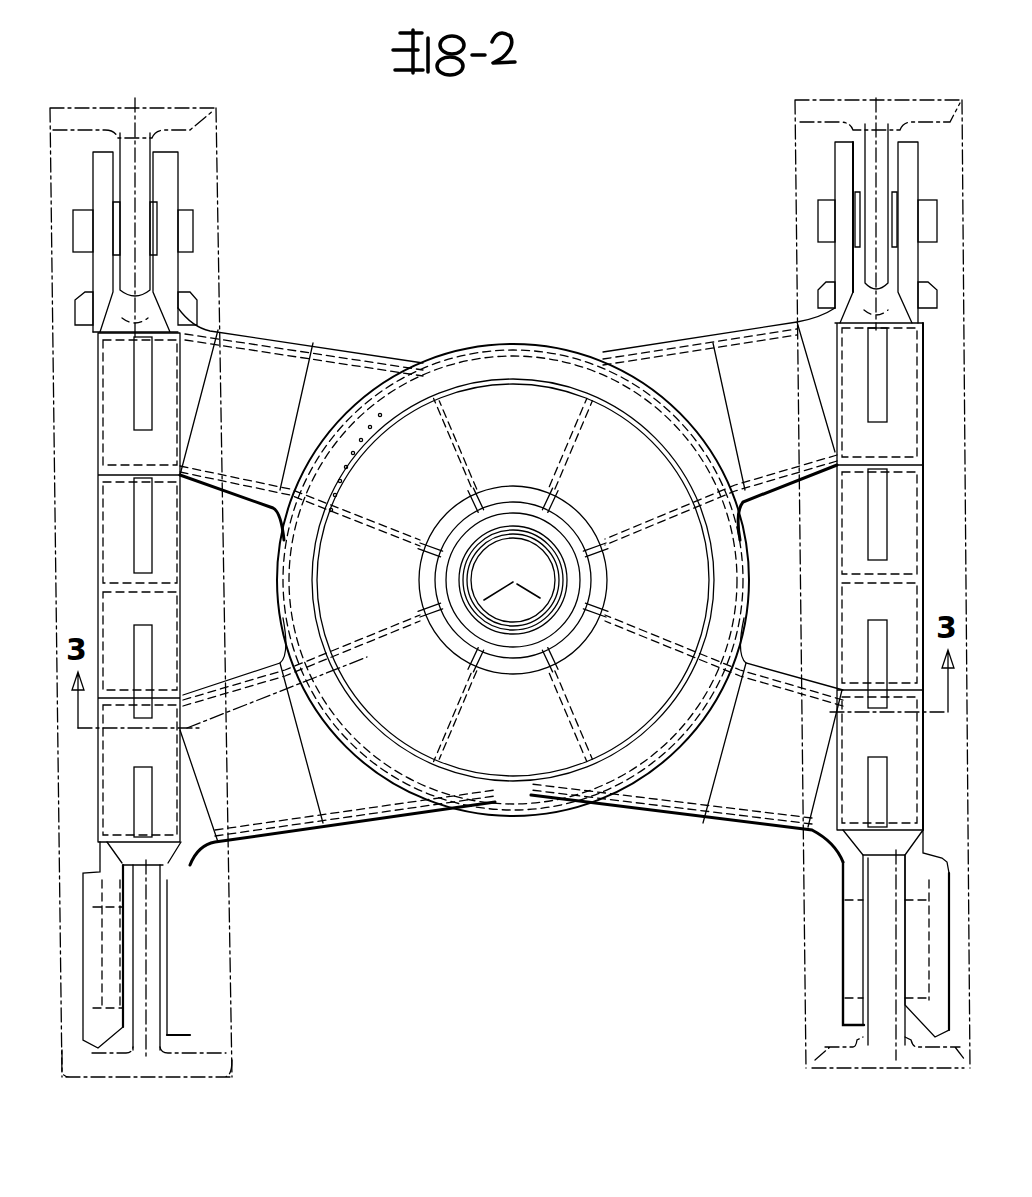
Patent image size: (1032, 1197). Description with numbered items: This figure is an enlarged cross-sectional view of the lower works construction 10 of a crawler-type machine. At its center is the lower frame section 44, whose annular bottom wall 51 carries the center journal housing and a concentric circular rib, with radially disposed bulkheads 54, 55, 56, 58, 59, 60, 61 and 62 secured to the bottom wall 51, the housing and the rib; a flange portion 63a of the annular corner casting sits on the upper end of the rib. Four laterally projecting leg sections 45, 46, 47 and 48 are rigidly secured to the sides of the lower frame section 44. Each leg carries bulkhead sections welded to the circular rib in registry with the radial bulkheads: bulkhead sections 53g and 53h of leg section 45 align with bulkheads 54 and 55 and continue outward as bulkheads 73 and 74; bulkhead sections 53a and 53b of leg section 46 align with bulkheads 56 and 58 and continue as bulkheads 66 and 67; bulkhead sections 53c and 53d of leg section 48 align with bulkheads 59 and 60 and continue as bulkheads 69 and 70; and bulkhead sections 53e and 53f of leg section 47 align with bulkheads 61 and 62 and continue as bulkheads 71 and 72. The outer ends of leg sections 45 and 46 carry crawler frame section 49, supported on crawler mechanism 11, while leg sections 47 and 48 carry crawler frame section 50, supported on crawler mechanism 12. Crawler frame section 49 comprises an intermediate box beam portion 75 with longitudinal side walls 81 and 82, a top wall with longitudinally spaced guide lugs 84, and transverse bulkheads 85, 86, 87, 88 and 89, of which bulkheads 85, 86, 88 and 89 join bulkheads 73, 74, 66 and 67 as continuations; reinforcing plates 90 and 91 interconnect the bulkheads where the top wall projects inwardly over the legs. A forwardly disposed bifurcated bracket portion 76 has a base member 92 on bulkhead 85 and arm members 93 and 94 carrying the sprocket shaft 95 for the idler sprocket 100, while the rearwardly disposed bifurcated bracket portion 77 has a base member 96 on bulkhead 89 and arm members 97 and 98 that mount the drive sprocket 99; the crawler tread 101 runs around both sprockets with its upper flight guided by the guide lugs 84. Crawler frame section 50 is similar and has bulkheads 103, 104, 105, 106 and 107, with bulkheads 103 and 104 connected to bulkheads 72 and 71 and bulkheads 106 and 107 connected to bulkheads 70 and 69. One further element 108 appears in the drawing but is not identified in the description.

The lower works construction 10 is at (440, 315).
The crawler mechanism 11 is at (228, 218).
The crawler mechanism 12 is at (790, 182).
The lower frame section 44 is at (470, 815).
The leg section 45 is at (283, 330).
The leg section 46 is at (283, 840).
The leg section 47 is at (700, 335).
The leg section 48 is at (668, 820).
The crawler frame section 49 is at (95, 500).
The crawler frame section 50 is at (925, 525).
The annular bottom wall 51 is at (610, 584).
The bulkhead section 53a is at (280, 660).
The bulkhead section 53b is at (370, 822).
The bulkhead section 53c is at (605, 822).
The bulkhead section 53d is at (745, 655).
The bulkhead section 53e is at (745, 510).
The bulkhead section 53f is at (640, 345).
The bulkhead section 53g is at (352, 346).
The bulkhead section 53h is at (285, 520).
The radially disposed bulkhead 54 is at (470, 450).
The radially disposed bulkhead 55 is at (355, 540).
The radially disposed bulkhead 56 is at (385, 655).
The radially disposed bulkhead 58 is at (470, 728).
The radially disposed bulkhead 59 is at (585, 700).
The radially disposed bulkhead 60 is at (620, 640).
The radially disposed bulkhead 61 is at (640, 515).
The radially disposed bulkhead 62 is at (572, 460).
The flange portion 63a is at (347, 793).
The bulkhead 66 is at (233, 715).
The bulkhead 67 is at (295, 805).
The bulkhead 69 is at (740, 825).
The bulkhead 70 is at (775, 700).
The bulkhead 71 is at (790, 445).
The bulkhead 72 is at (735, 345).
The bulkhead 73 is at (235, 355).
The bulkhead 74 is at (243, 470).
The box beam portion 75 is at (100, 615).
The bifurcated bracket portion 76 is at (178, 185).
The bifurcated bracket portion 77 is at (190, 995).
The side wall 81 is at (102, 585).
The side wall 82 is at (185, 620).
The guide lugs 84 is at (140, 400).
The bulkhead 85 is at (103, 345).
The bulkhead 86 is at (118, 465).
The bulkhead 87 is at (165, 580).
The bulkhead 88 is at (118, 745).
The bulkhead 89 is at (108, 820).
The reinforcing plate 90 is at (192, 400).
The reinforcing plate 91 is at (185, 805).
The base member 92 is at (150, 305).
The arm member 93 is at (93, 178).
The arm member 94 is at (170, 162).
The sprocket shaft 95 is at (185, 242).
The base member 96 is at (160, 858).
The arm member 97 is at (90, 1030).
The arm member 98 is at (185, 1018).
The drive sprocket 99 is at (160, 940).
The idler sprocket 100 is at (140, 118).
The crawler tread 101 is at (225, 108).
The bulkhead 103 is at (905, 340).
The bulkhead 104 is at (910, 472).
The bulkhead 105 is at (905, 590).
The bulkhead 106 is at (905, 715).
The bulkhead 107 is at (905, 820).
The right lower fork 108 is at (888, 949).